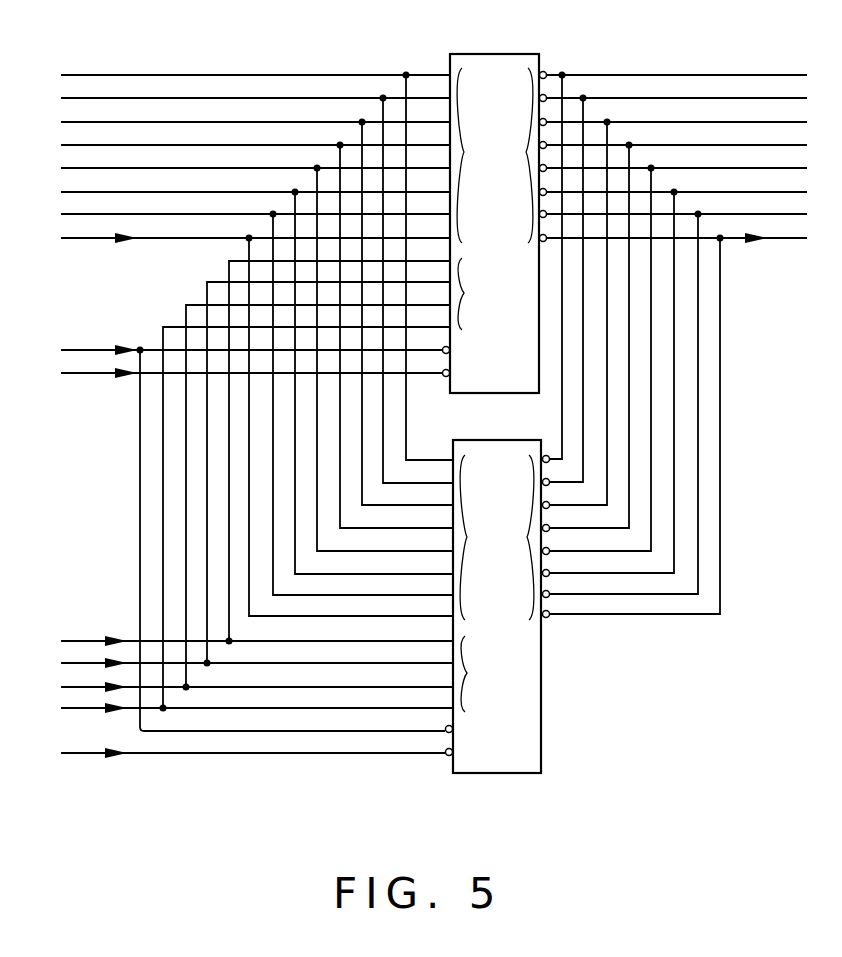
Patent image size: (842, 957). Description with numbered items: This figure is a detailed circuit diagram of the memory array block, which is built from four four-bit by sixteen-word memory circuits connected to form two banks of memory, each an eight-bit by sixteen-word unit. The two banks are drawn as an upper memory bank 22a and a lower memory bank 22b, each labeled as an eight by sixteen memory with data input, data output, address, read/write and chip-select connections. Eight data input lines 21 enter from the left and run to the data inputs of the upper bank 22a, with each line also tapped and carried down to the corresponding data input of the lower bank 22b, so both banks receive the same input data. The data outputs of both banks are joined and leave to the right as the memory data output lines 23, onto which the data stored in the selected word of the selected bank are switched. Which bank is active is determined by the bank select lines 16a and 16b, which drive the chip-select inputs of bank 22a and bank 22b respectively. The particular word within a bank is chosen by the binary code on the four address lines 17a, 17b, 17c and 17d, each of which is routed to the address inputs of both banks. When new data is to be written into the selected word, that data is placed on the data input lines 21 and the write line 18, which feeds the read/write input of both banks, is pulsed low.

The data input lines 21 is at (174, 66).
The memory bank 22a is at (509, 54).
The memory bank 22b is at (507, 440).
The memory data output lines 23 is at (774, 68).
The write line 18 is at (149, 346).
The bank select line 16a is at (107, 376).
The bank select line 16b is at (128, 757).
The address line 17a is at (88, 640).
The address line 17b is at (66, 662).
The address line 17c is at (68, 687).
The address line 17d is at (66, 708).